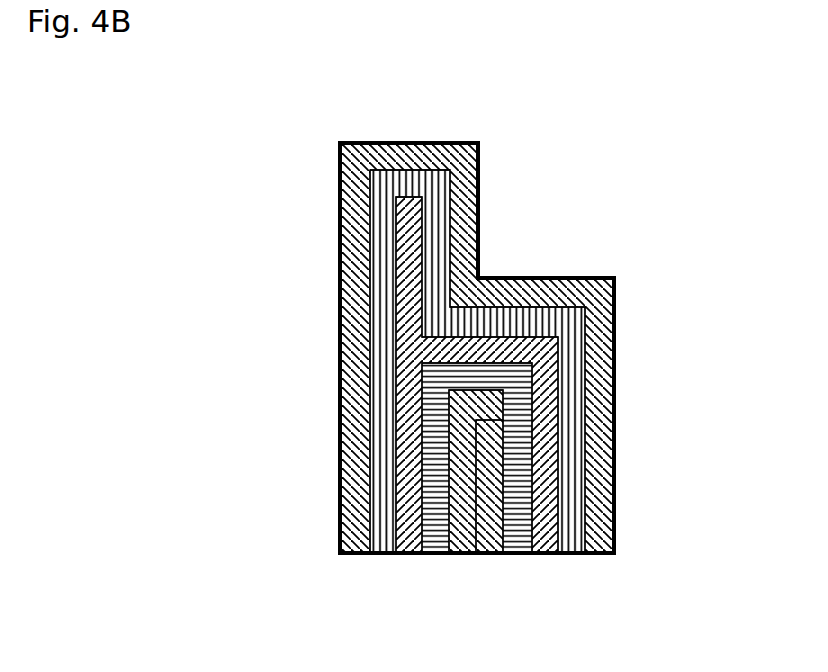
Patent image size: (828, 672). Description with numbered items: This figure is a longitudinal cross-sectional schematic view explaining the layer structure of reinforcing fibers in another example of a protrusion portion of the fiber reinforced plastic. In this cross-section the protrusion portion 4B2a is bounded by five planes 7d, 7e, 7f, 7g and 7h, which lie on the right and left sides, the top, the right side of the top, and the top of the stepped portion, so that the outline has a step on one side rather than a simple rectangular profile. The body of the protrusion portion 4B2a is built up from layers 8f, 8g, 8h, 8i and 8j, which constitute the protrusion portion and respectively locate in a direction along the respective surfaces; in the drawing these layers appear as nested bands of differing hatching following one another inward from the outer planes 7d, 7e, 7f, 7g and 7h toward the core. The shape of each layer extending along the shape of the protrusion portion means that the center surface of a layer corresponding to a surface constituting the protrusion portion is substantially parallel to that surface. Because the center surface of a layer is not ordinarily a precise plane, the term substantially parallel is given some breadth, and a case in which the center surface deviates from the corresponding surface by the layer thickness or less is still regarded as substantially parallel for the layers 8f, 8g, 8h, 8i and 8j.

The protrusion portion 4B2a is at (312, 252).
The plane 7d is at (340, 520).
The plane 7e is at (408, 143).
The plane 7f is at (478, 232).
The plane 7g is at (572, 278).
The plane 7h is at (614, 378).
The layer 8f is at (368, 561).
The layer 8g is at (395, 579).
The layer 8h is at (422, 561).
The layer 8i is at (450, 579).
The layer 8j is at (477, 561).